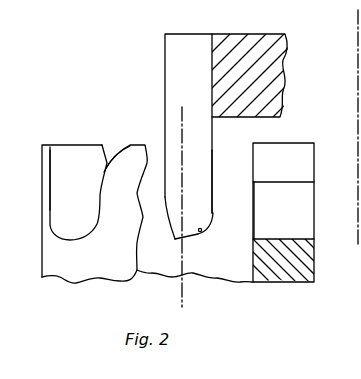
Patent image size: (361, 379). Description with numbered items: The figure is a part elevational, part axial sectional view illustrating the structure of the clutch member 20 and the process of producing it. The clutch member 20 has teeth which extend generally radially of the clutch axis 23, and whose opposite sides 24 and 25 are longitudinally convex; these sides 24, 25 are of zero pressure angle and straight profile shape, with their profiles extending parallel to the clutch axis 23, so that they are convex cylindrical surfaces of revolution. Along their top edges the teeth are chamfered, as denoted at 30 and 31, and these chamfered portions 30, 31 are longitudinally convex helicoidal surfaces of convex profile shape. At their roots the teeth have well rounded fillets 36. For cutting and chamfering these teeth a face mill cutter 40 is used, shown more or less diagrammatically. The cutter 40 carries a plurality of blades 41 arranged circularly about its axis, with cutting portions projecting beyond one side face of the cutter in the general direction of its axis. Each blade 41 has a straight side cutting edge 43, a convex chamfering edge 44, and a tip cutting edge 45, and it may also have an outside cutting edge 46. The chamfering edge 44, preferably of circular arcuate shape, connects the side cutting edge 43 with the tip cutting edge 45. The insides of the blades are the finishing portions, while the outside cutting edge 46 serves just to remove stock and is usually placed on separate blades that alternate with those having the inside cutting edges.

The clutch member 20 is at (82, 270).
The clutch axis 23 is at (185, 253).
The side of tooth 24 is at (63, 203).
The side of tooth 25 is at (102, 197).
The chamfered portion 30 is at (63, 155).
The chamfered portion 31 is at (117, 143).
The fillet 36 is at (90, 231).
The face mill cutter 40 is at (271, 46).
The blade 41 is at (176, 65).
The side cutting edge 43 is at (212, 185).
The chamfering edge 44 is at (204, 231).
The tip cutting edge 45 is at (174, 239).
The outside cutting edge 46 is at (165, 182).